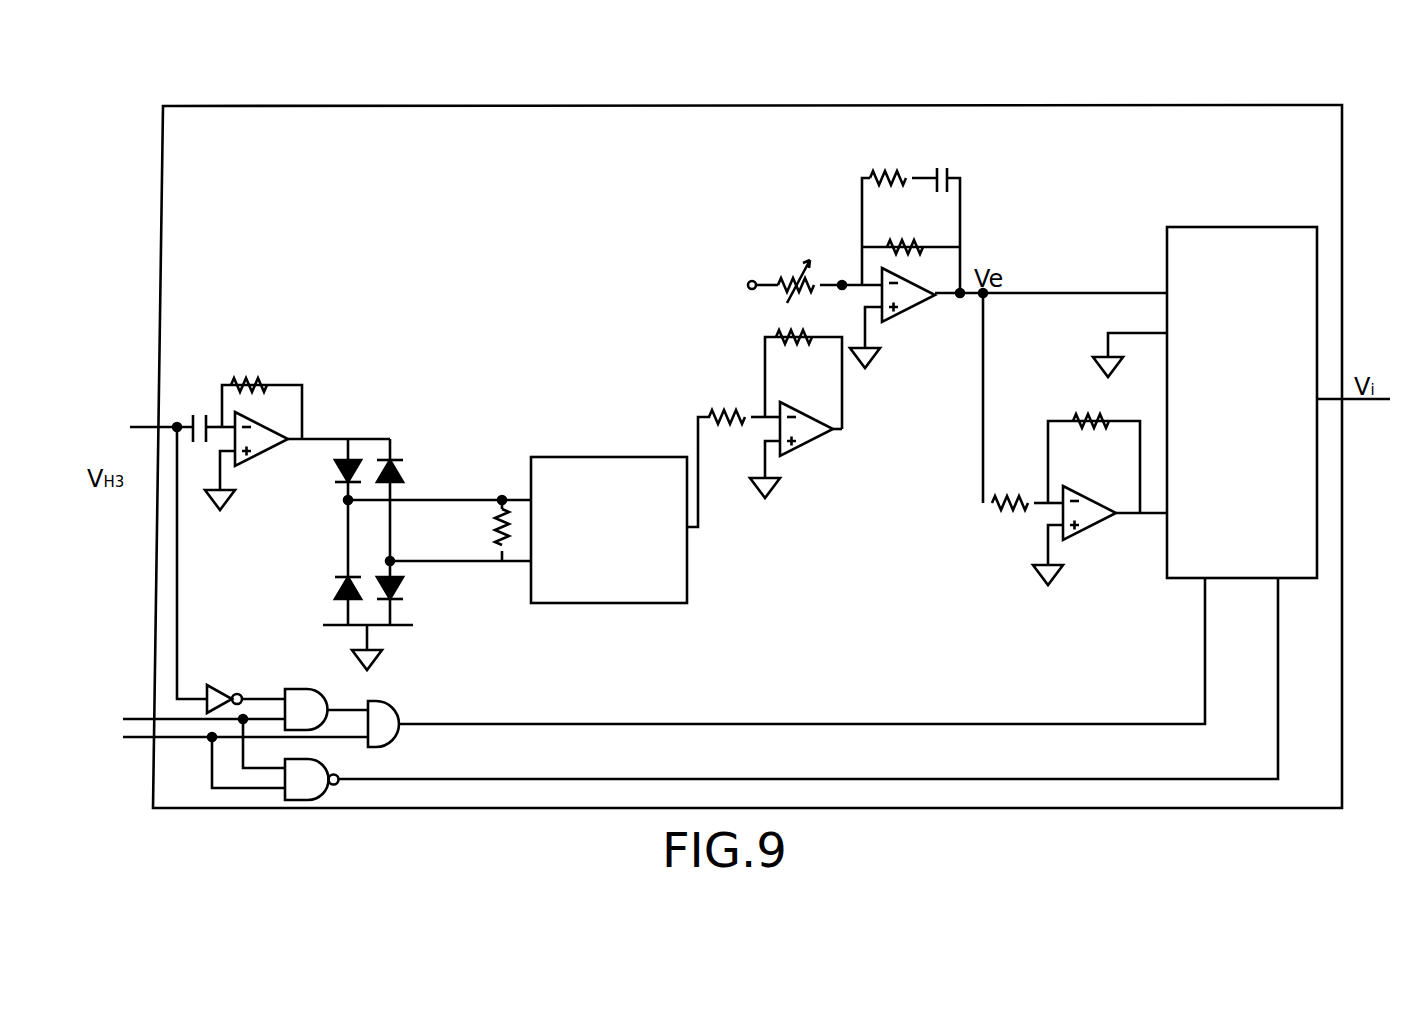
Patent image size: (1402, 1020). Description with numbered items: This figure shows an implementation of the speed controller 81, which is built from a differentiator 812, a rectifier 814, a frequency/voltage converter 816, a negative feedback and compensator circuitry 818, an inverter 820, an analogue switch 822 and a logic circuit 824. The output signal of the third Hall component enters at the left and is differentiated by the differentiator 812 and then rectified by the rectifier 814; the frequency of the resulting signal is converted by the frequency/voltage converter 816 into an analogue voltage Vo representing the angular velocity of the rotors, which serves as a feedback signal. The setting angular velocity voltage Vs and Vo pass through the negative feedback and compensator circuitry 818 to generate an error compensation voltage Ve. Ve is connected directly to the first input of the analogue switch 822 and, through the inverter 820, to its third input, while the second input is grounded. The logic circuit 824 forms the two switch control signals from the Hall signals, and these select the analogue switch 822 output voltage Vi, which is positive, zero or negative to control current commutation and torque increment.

The speed controller 81 is at (1000, 98).
The differentiator 812 is at (233, 312).
The rectifier 814 is at (387, 412).
The frequency/voltage converter 816 is at (597, 397).
The negative feedback and compensator circuitry 818 is at (827, 173).
The inverter 820 is at (1010, 633).
The analogue switch 822 is at (1183, 225).
The logic circuit 824 is at (260, 667).